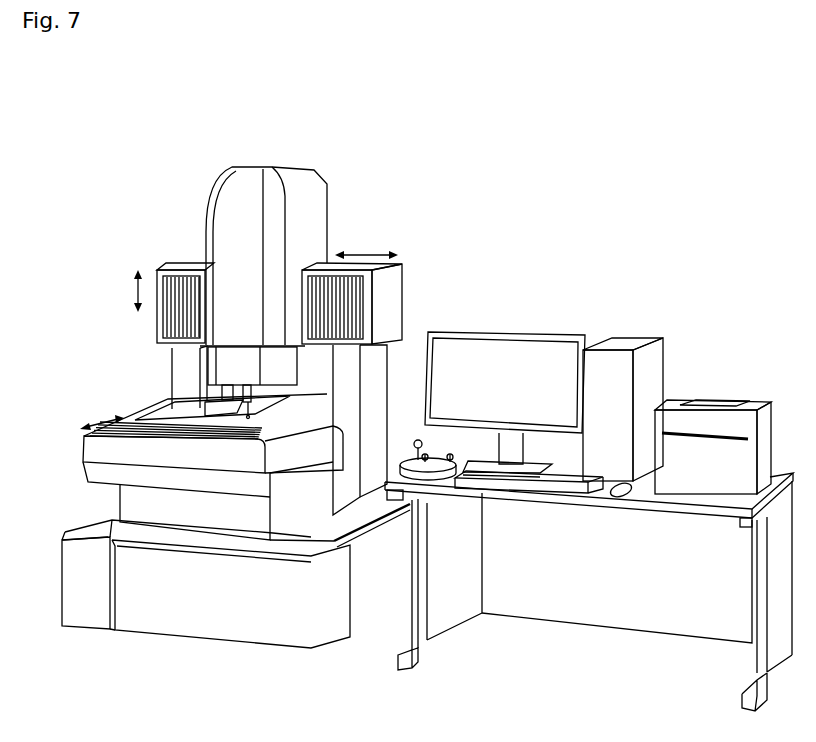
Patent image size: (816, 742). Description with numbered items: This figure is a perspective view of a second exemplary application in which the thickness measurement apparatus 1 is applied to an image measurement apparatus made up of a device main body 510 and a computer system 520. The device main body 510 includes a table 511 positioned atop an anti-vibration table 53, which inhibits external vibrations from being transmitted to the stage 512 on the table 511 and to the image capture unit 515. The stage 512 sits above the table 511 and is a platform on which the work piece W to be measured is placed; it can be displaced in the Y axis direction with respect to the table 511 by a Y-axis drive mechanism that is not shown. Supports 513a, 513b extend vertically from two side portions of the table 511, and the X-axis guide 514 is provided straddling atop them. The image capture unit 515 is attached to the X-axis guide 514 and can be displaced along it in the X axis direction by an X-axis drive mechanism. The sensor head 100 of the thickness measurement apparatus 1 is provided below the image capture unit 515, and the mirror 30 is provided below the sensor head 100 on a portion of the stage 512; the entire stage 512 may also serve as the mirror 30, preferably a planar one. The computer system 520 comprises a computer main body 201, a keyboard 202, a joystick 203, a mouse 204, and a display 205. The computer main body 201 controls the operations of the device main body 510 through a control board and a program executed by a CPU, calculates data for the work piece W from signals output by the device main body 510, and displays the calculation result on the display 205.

The thickness measurement apparatus 1 is at (96, 302).
The device main body 510 is at (338, 139).
The image capture unit 515 is at (207, 204).
The X-axis guide 514 is at (170, 264).
The sensor head 100 is at (248, 402).
The support 513a is at (380, 382).
The support 513b is at (176, 399).
The table 511 is at (97, 447).
The mirror 30 is at (252, 398).
The work piece W is at (172, 408).
The stage 512 is at (276, 418).
The anti-vibration table 53 is at (227, 613).
The computer system 520 is at (622, 298).
The display 205 is at (508, 333).
The keyboard 202 is at (540, 492).
The joystick 203 is at (445, 478).
The mouse 204 is at (619, 497).
The computer main body 201 is at (642, 336).